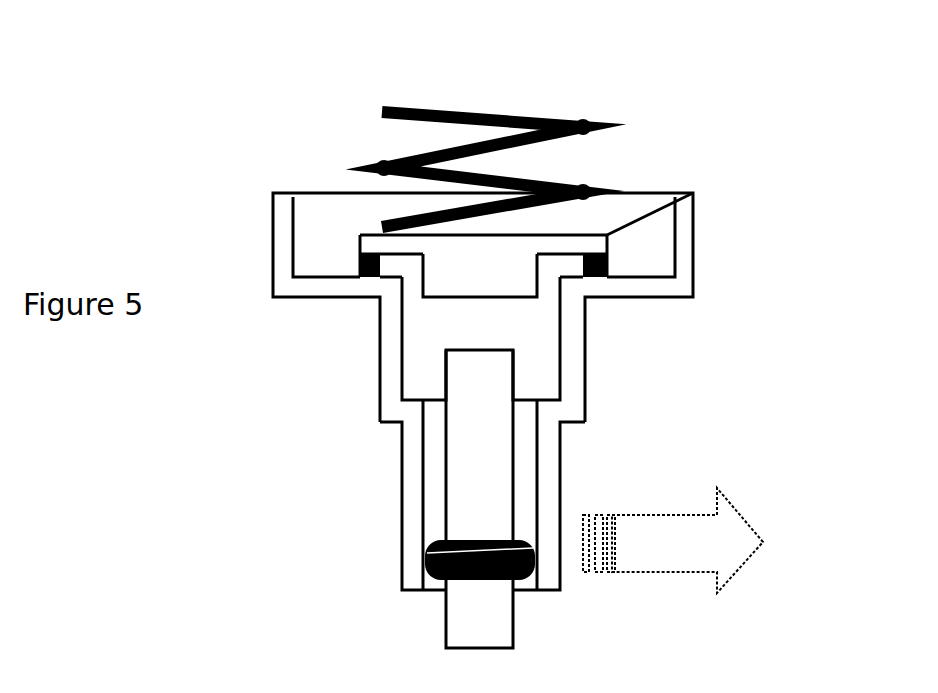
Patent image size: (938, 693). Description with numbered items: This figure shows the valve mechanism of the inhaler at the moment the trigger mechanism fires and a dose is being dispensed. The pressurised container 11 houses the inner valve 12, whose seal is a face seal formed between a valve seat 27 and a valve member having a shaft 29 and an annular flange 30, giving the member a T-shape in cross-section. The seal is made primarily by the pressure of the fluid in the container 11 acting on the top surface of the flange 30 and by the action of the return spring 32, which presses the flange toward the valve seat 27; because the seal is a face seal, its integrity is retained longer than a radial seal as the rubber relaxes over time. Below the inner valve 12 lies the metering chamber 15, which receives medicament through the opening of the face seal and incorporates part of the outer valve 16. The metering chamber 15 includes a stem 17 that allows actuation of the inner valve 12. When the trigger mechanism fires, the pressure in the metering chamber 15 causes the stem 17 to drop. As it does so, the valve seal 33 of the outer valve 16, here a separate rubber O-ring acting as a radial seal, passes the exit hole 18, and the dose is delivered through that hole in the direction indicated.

The pressurised container 11 is at (693, 227).
The inner valve 12 is at (636, 204).
The metering chamber 15 is at (423, 310).
The outer valve 16 is at (660, 582).
The stem 17 is at (467, 450).
The exit hole 18 is at (560, 546).
The valve seat 27 is at (608, 272).
The shaft 29 is at (490, 270).
The annular flange 30 is at (607, 233).
The return spring 32 is at (420, 152).
The valve seal 33 is at (467, 537).